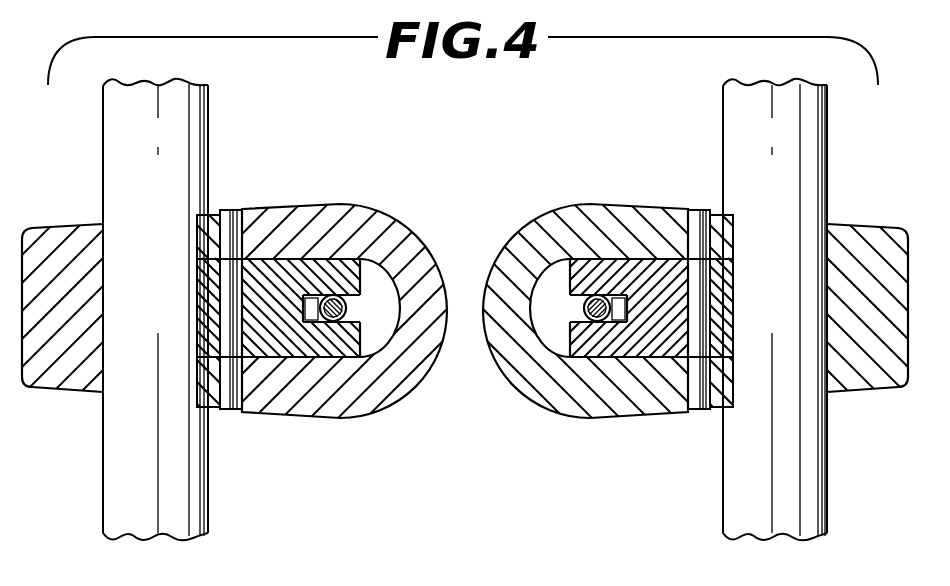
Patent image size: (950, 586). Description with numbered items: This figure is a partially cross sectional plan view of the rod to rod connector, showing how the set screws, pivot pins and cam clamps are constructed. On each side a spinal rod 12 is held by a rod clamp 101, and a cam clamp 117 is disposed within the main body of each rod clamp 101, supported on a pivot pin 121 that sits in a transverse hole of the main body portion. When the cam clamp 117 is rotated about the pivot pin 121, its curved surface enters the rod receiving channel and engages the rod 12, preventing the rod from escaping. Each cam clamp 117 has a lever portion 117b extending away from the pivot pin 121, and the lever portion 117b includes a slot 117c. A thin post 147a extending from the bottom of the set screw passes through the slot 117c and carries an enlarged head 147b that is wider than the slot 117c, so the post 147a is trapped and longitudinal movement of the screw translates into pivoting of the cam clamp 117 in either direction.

The spinal rod 12 is at (112, 408).
The rod clamp 101 is at (65, 228).
The pivot pin 121 is at (229, 222).
The cam clamp 117 is at (330, 257).
The lever portion 117b is at (340, 350).
The slot 117c is at (358, 300).
The thin post 147a is at (602, 322).
The enlarged head 147b is at (582, 303).